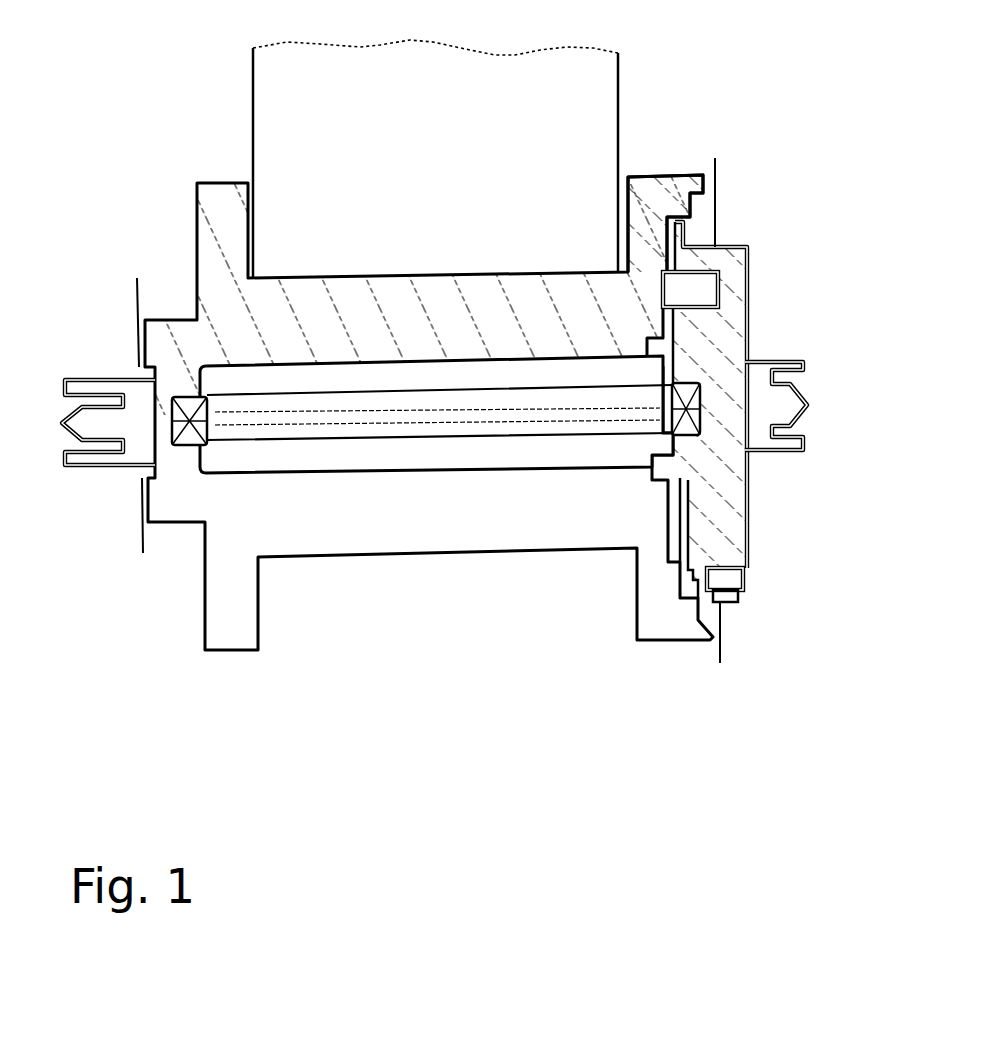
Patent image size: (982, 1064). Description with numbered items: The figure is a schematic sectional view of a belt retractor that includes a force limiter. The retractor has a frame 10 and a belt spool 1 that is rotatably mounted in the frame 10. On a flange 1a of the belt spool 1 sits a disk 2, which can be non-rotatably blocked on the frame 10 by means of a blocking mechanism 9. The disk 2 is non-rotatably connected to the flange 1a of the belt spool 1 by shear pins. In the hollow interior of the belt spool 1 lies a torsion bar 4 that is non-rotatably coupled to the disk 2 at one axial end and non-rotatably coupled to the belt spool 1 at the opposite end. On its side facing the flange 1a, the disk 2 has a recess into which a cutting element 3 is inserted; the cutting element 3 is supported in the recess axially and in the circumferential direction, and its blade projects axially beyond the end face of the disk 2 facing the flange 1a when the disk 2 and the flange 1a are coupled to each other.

The belt spool 1 is at (495, 543).
The flange 1a is at (703, 193).
The disk 2 is at (735, 470).
The cutting element 3 is at (710, 287).
The torsion bar 4 is at (368, 437).
The blocking mechanism 9 is at (733, 578).
The frame 10 is at (728, 192).